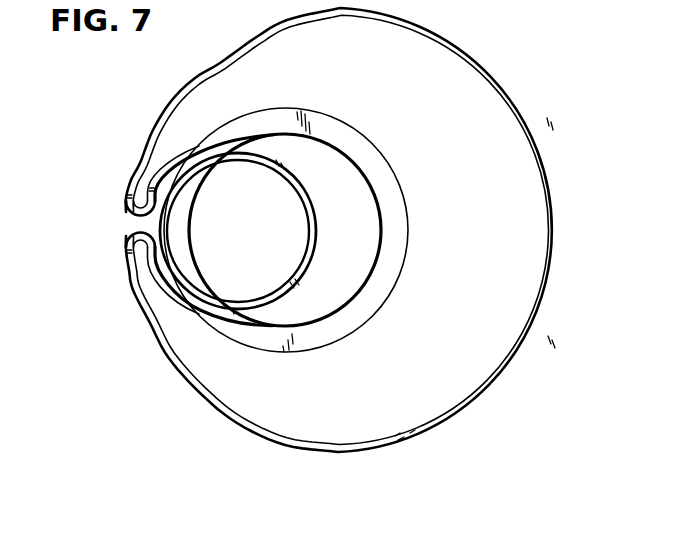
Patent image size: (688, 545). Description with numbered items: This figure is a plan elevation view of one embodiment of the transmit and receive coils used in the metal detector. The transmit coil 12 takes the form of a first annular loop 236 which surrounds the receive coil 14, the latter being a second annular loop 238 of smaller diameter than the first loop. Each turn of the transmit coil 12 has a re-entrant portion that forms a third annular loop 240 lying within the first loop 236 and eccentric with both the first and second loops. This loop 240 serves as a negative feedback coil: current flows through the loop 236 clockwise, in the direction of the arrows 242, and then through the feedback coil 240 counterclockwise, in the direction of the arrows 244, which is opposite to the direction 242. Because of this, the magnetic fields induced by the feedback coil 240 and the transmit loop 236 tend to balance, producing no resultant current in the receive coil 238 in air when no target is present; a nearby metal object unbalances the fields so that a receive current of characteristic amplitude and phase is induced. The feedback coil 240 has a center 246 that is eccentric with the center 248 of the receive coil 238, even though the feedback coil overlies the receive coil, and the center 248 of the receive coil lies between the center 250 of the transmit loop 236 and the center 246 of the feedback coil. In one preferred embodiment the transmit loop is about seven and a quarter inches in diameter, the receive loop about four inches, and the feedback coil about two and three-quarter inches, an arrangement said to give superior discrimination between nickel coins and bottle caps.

The transmit coil 12 is at (522, 97).
The receive coil 14 is at (336, 110).
The first annular loop 236 is at (530, 355).
The second annular loop 238 is at (409, 250).
The third annular loop 240 is at (291, 284).
The arrows 242 is at (114, 177).
The arrows 244 is at (150, 188).
The center 246 is at (228, 229).
The center 248 is at (290, 231).
The center 250 is at (342, 233).